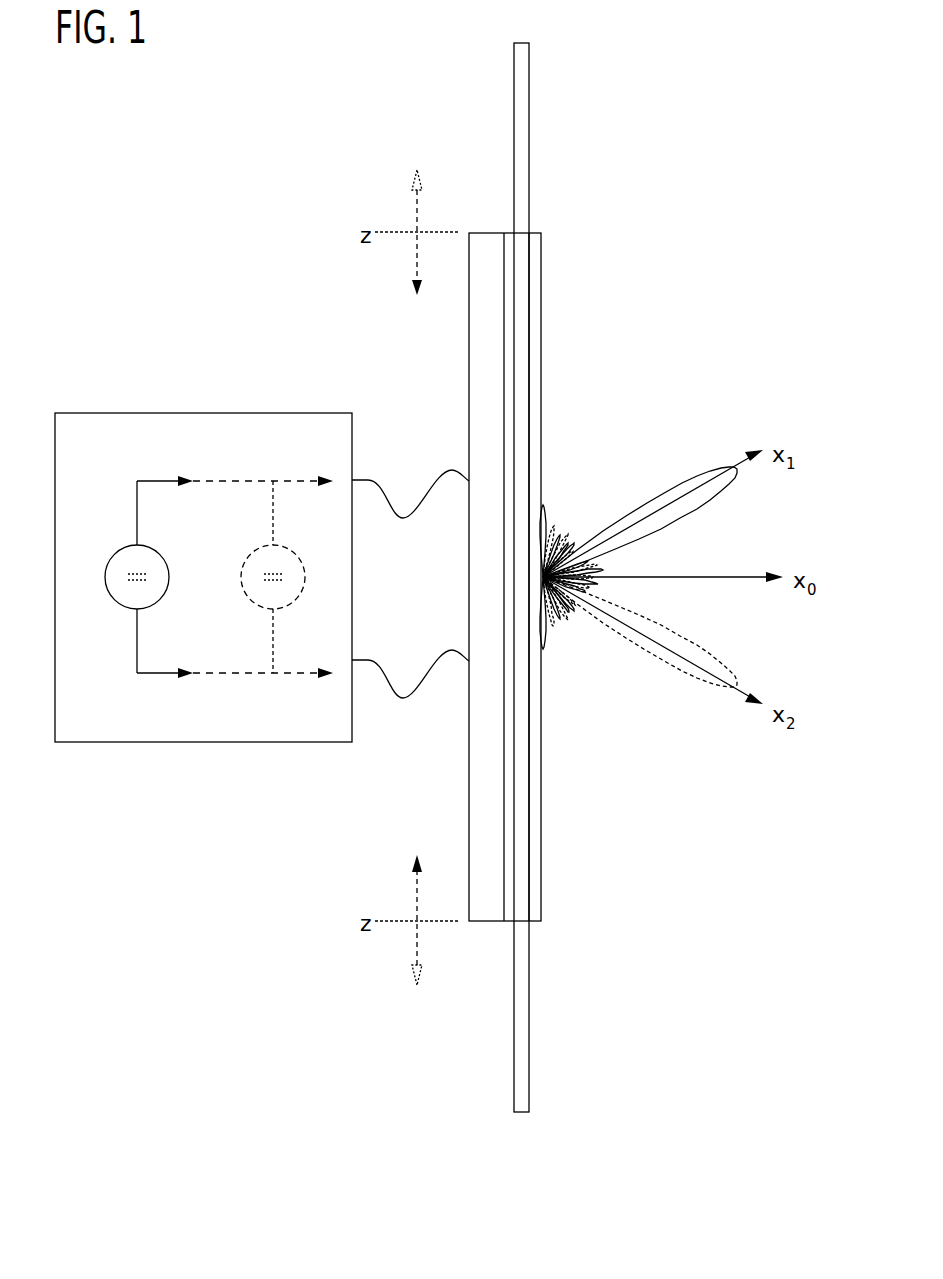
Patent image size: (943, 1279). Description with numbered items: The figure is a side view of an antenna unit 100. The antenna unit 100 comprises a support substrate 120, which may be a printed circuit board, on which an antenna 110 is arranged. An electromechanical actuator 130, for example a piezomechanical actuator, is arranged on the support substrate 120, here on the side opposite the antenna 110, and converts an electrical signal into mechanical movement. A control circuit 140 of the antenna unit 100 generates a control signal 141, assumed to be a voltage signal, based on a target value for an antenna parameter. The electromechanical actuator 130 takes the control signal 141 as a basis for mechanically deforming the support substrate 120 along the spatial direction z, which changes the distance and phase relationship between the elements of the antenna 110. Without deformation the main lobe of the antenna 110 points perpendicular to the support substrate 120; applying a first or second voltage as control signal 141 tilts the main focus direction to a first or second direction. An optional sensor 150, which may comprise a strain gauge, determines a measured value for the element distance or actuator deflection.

The antenna unit 100 is at (224, 1050).
The antenna 110 is at (553, 797).
The support substrate 120 is at (524, 988).
The electromechanical actuator 130 is at (492, 787).
The control circuit 140 is at (203, 413).
The control signal 141 is at (455, 470).
The sensor 150 is at (510, 246).